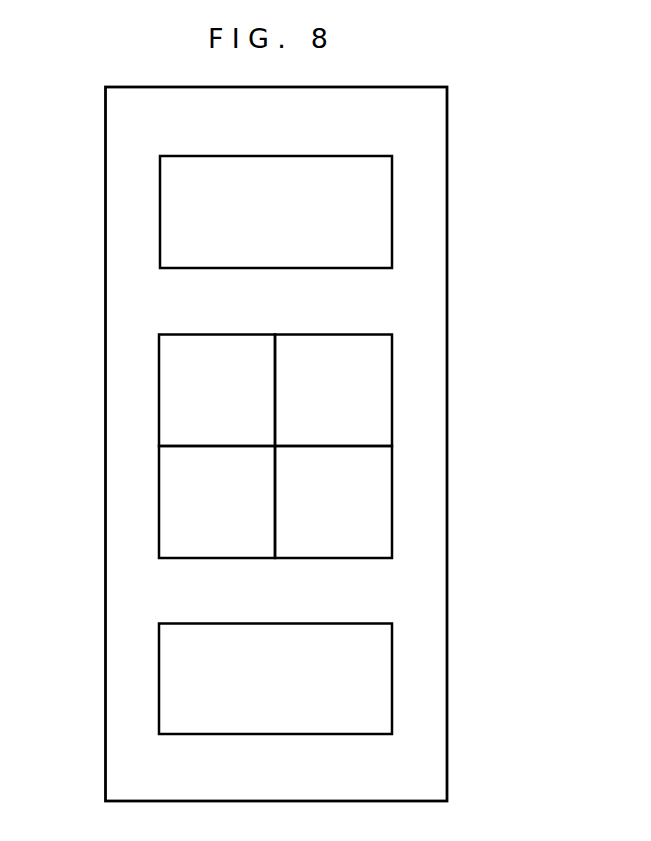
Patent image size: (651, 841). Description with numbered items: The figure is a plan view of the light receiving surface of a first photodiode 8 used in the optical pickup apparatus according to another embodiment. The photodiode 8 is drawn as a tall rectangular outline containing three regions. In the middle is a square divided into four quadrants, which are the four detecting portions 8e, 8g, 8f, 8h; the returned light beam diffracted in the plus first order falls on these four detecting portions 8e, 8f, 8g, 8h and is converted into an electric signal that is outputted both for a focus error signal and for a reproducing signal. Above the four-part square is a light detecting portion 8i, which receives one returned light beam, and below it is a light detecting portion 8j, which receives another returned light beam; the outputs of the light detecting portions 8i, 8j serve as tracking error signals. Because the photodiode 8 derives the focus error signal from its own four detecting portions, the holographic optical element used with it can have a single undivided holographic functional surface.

The first photodiode 8 is at (451, 120).
The light detecting portion 8i is at (375, 213).
The detecting portion 8e is at (172, 383).
The detecting portion 8g is at (372, 385).
The detecting portion 8f is at (178, 500).
The detecting portion 8h is at (373, 497).
The light detecting portion 8j is at (375, 677).